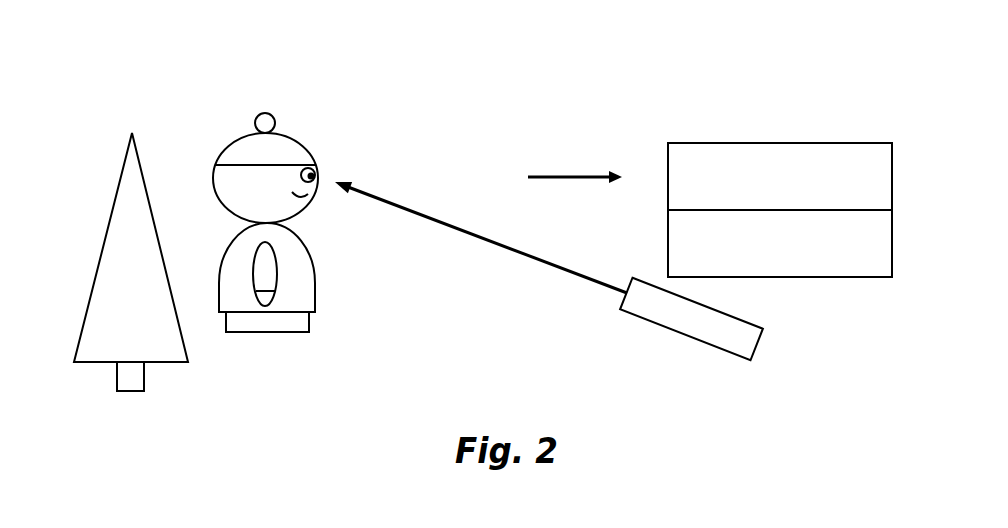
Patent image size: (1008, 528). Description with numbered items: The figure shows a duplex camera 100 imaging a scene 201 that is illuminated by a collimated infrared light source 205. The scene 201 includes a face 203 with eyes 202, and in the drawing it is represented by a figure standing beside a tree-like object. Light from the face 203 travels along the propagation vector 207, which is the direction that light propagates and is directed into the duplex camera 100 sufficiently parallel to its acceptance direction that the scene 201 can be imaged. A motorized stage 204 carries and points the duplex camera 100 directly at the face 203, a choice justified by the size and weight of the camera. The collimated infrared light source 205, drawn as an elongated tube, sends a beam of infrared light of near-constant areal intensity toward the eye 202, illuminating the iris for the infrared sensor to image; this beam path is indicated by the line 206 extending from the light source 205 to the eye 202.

The scene 201 is at (120, 75).
The eyes 202 is at (327, 173).
The face 203 is at (290, 202).
The duplex camera 100 is at (800, 204).
The motorized stage 204 is at (800, 270).
The collimated infrared light source 205 is at (738, 332).
The microphone line of sight / audio pickup direction 206 is at (595, 281).
The propagation vector 207 is at (567, 172).